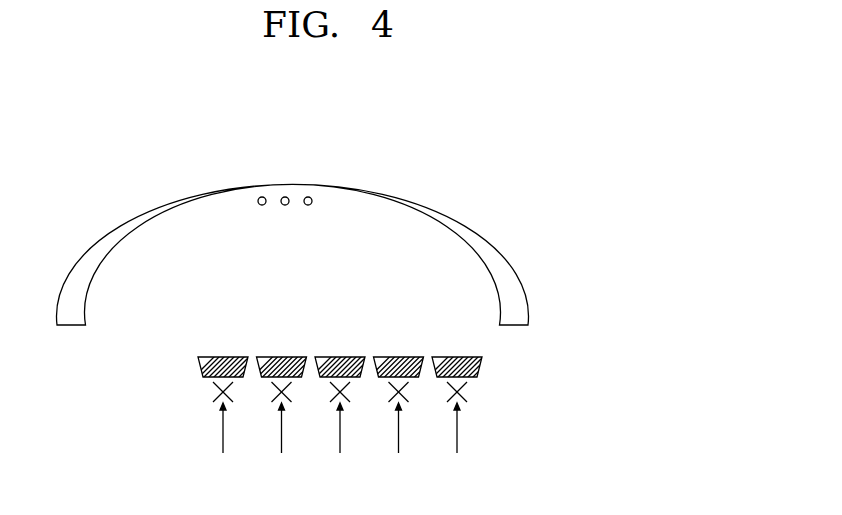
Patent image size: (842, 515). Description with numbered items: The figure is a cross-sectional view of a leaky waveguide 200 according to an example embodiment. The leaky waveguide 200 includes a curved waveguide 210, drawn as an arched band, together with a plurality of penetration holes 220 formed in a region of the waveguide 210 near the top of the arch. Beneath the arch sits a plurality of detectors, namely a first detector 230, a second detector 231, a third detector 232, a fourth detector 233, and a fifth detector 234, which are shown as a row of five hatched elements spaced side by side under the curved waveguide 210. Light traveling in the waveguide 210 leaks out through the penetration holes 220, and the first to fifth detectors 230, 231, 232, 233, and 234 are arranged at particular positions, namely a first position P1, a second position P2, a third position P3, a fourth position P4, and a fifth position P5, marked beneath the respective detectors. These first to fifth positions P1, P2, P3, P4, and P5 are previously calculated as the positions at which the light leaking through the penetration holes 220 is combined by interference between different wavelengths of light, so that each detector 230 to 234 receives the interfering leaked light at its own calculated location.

The leaky waveguide 200 is at (520, 128).
The curved waveguide 210 is at (189, 201).
The penetration holes 220 is at (262, 196).
The first detector 230 is at (223, 356).
The second detector 231 is at (282, 356).
The third detector 232 is at (340, 356).
The fourth detector 233 is at (398, 356).
The fifth detector 234 is at (457, 356).
The first position P1 is at (222, 444).
The second position P2 is at (281, 444).
The third position P3 is at (339, 444).
The fourth position P4 is at (398, 444).
The fifth position P5 is at (456, 444).